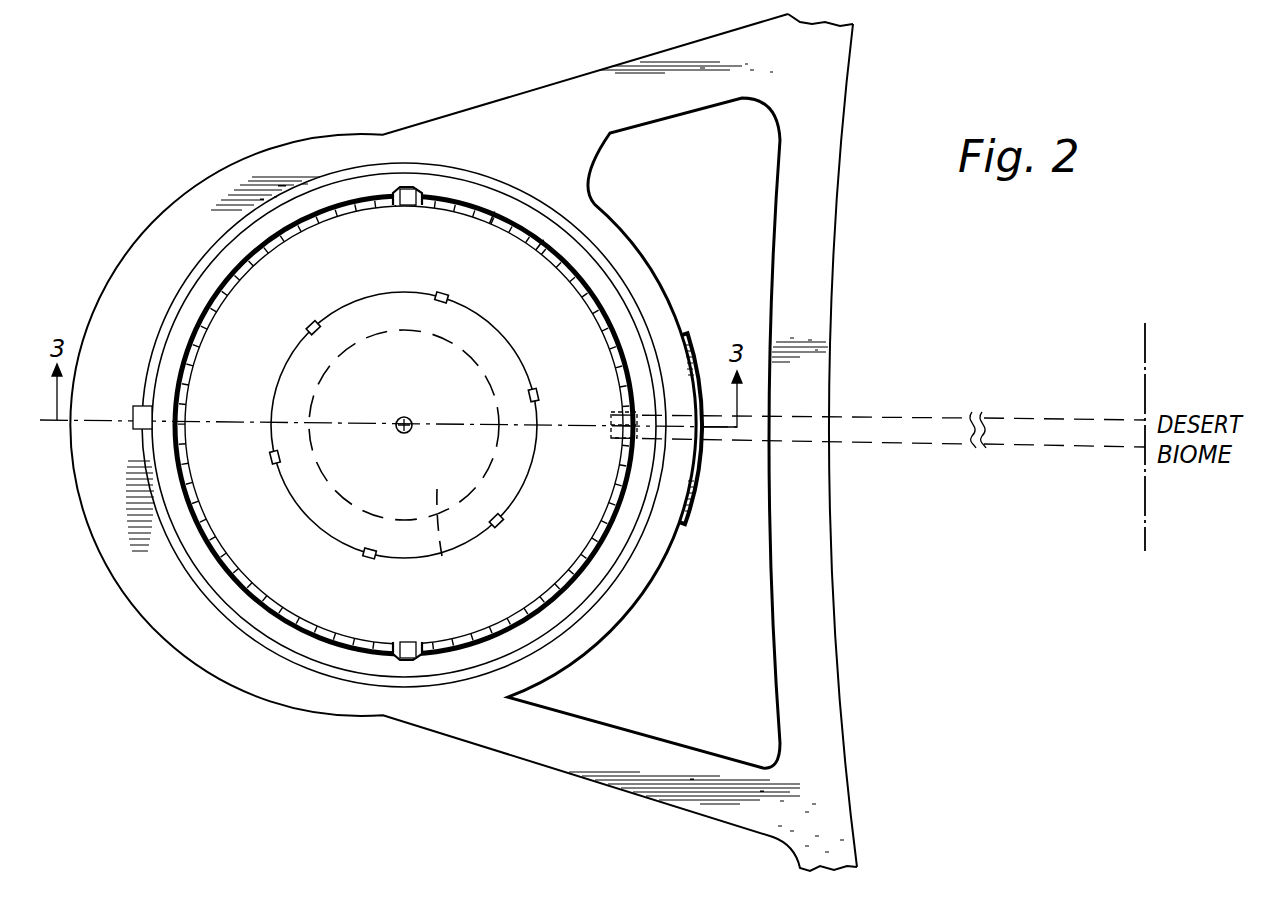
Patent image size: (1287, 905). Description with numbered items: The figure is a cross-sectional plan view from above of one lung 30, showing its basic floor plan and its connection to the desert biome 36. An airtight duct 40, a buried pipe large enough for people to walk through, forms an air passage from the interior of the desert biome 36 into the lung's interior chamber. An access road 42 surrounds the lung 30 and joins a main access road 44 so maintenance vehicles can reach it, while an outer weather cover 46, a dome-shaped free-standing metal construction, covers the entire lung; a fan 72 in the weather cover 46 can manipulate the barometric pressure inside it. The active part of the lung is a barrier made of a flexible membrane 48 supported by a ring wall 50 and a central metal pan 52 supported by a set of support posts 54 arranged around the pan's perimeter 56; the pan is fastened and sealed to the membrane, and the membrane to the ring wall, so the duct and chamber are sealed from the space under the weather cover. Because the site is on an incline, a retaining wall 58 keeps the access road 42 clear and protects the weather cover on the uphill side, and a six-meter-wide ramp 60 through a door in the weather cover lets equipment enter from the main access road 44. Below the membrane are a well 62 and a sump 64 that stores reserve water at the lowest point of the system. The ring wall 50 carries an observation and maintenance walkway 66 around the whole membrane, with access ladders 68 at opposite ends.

The lung 30 is at (186, 200).
The desert biome 36 is at (1145, 492).
The airtight duct 40 is at (898, 412).
The access road 42 is at (243, 638).
The main access road 44 is at (830, 332).
The outer weather cover 46 is at (197, 577).
The flexible membrane 48 is at (264, 528).
The ring wall 50 is at (188, 508).
The metal pan 52 is at (418, 381).
The support posts 54 is at (438, 292).
The perimeter 56 is at (282, 368).
The retaining wall 58 is at (695, 346).
The ramp 60 is at (517, 212).
The well 62 is at (432, 540).
The sump 64 is at (413, 417).
The observation and maintenance walkway 66 is at (292, 247).
The access ladders 68 is at (417, 207).
The fan 72 is at (134, 410).